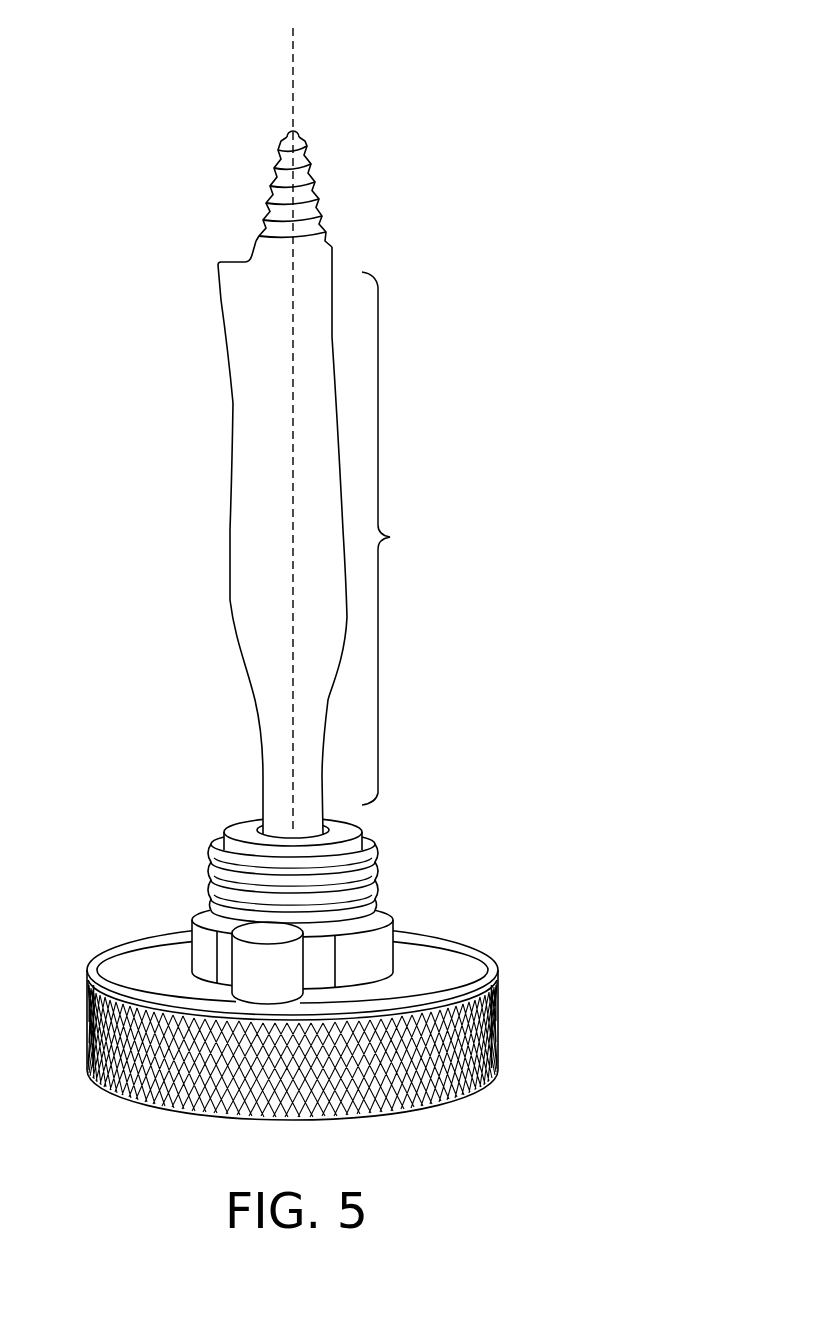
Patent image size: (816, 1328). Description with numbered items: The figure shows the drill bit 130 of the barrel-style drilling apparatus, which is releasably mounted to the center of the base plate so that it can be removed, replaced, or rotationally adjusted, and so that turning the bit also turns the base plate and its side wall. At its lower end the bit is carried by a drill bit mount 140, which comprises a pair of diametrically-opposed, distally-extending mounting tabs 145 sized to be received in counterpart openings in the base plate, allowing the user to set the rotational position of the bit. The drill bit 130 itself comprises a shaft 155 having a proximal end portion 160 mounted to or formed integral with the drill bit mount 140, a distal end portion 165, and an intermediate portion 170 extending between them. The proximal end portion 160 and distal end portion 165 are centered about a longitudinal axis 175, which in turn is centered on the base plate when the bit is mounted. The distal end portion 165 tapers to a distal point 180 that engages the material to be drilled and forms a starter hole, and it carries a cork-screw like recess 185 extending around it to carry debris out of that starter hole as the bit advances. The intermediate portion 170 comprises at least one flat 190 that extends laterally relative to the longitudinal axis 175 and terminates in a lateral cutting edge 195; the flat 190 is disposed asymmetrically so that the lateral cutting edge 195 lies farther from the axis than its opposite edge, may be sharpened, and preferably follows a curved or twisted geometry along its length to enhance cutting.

The drill bit 130 is at (139, 305).
The drill bit mount 140 is at (533, 981).
The mounting tabs 145 is at (303, 962).
The shaft 155 is at (431, 264).
The proximal end portion 160 is at (348, 820).
The distal end portion 165 is at (334, 144).
The intermediate portion 170 is at (400, 538).
The longitudinal axis 175 is at (316, 42).
The distal point 180 is at (259, 129).
The cork-screw like recess 185 is at (329, 174).
The flat 190 is at (238, 605).
The lateral cutting edge 195 is at (216, 401).